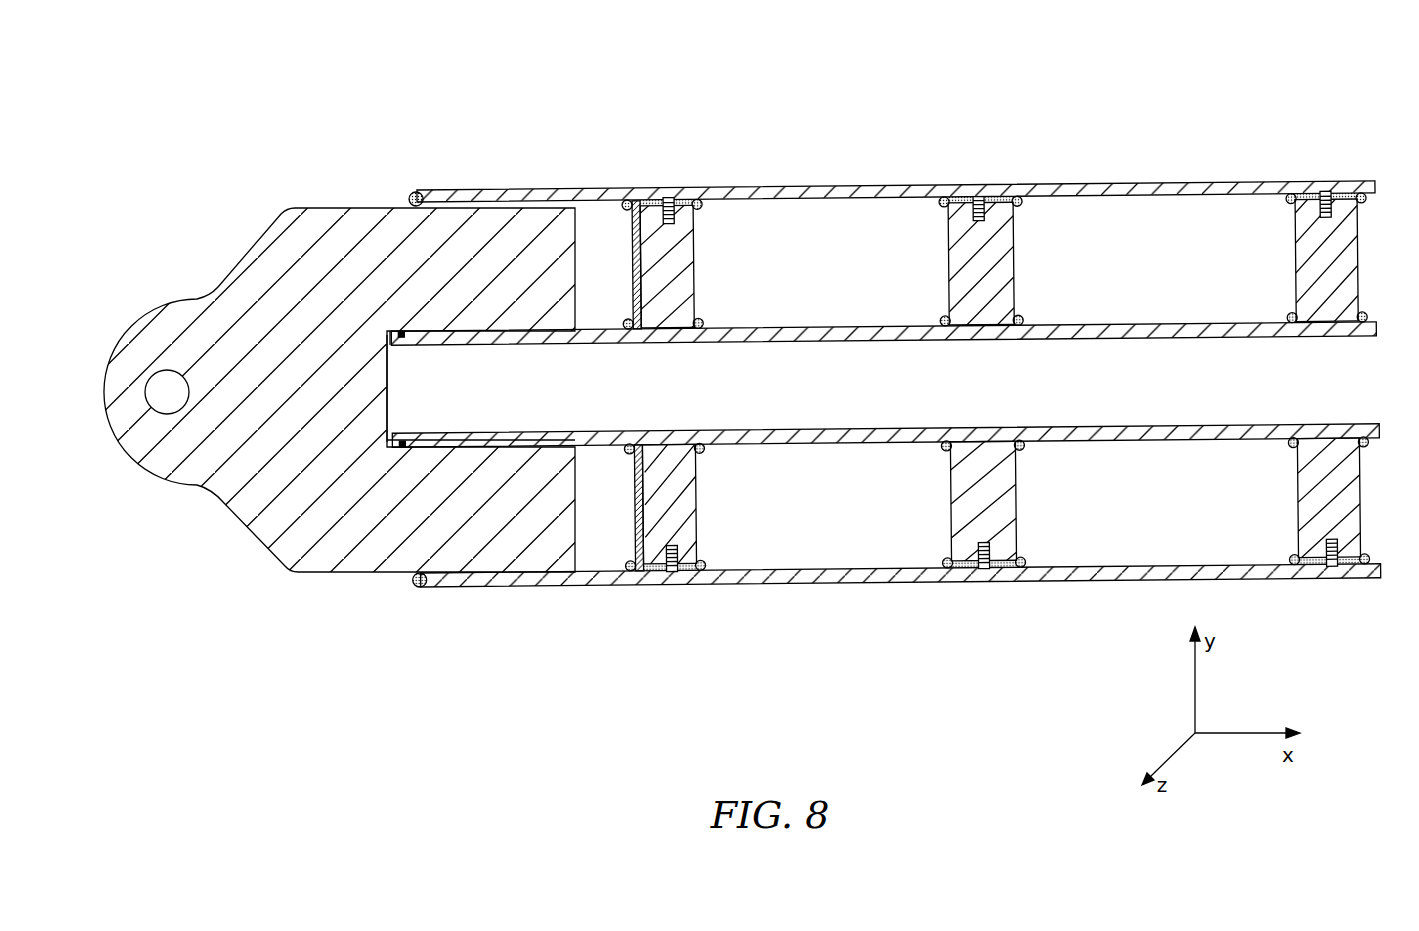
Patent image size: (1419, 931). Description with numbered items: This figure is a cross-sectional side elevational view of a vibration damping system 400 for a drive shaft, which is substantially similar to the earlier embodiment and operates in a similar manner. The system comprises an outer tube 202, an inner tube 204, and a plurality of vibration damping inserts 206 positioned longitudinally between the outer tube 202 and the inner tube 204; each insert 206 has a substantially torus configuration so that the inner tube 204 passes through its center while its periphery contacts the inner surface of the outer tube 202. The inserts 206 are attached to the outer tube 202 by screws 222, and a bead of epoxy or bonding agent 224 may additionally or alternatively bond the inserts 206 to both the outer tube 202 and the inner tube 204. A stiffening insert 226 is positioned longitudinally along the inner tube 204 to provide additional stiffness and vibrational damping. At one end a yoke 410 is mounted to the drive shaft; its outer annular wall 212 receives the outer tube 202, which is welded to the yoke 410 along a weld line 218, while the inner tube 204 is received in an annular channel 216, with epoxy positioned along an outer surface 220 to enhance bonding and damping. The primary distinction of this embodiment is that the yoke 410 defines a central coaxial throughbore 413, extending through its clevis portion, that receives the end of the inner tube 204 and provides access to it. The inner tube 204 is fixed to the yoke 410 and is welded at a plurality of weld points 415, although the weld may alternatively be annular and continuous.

The vibration damping system 400 is at (840, 70).
The outer tube 202 is at (548, 190).
The inner tube 204 is at (808, 448).
The vibration damping insert 206 is at (692, 262).
The outer annular wall 212 is at (388, 228).
The annular channel 216 is at (390, 440).
The weld line 218 is at (418, 191).
The outer surface 220 is at (652, 346).
The screw 222 is at (669, 199).
The bead of epoxy or bonding agent 224 is at (624, 205).
The stiffening insert 226 is at (632, 222).
The yoke 410 is at (345, 576).
The central coaxial throughbore 413 is at (398, 372).
The weld points 415 is at (398, 338).